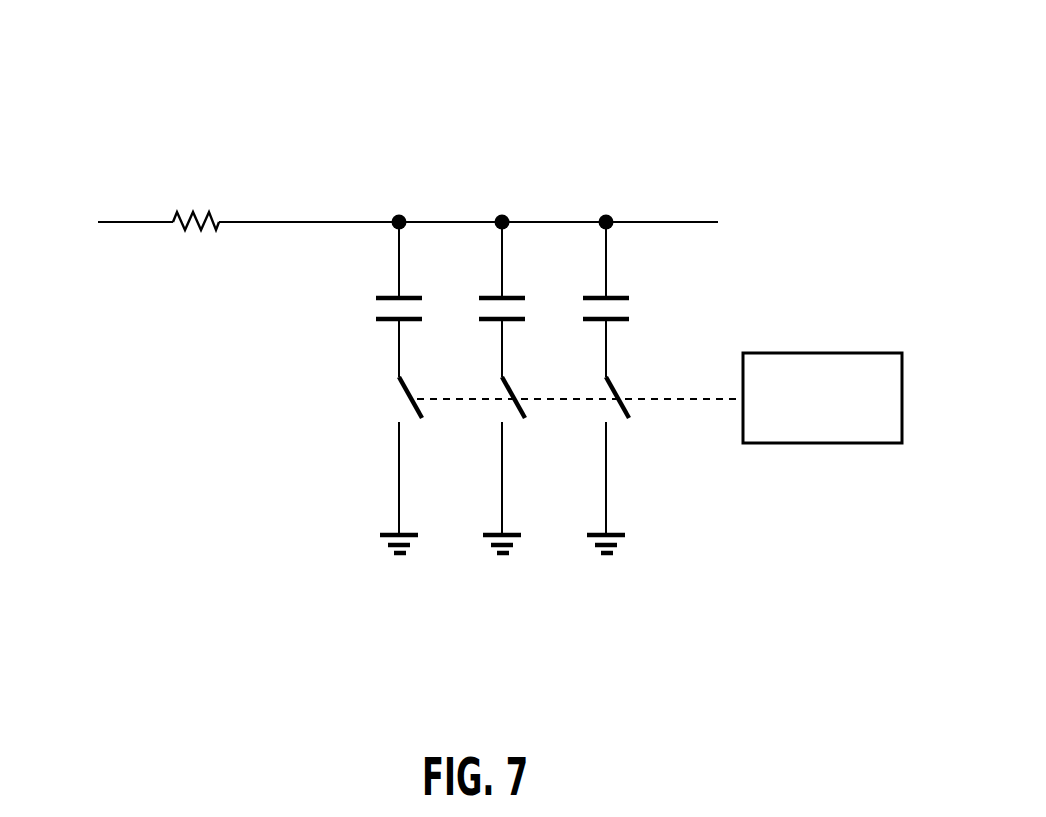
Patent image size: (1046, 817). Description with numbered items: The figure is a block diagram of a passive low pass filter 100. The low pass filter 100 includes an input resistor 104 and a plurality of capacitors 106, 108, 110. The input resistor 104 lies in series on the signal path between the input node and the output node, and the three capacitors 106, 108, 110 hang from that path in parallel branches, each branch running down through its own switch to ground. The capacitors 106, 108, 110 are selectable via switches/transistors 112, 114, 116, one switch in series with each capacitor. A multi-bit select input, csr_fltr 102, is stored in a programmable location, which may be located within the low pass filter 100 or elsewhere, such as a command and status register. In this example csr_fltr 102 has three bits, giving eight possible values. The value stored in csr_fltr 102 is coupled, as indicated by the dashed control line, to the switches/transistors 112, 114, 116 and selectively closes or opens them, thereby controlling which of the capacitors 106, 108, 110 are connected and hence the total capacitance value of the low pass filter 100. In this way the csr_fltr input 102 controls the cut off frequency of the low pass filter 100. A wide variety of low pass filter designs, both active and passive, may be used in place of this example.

The passive low pass filter 100 is at (452, 38).
The csr_fltr 102 is at (820, 353).
The input resistor 104 is at (197, 217).
The capacitor 106 is at (390, 293).
The capacitor 108 is at (493, 295).
The capacitor 110 is at (597, 295).
The switch/transistor 112 is at (400, 404).
The switch/transistor 114 is at (502, 404).
The switch/transistor 116 is at (603, 404).